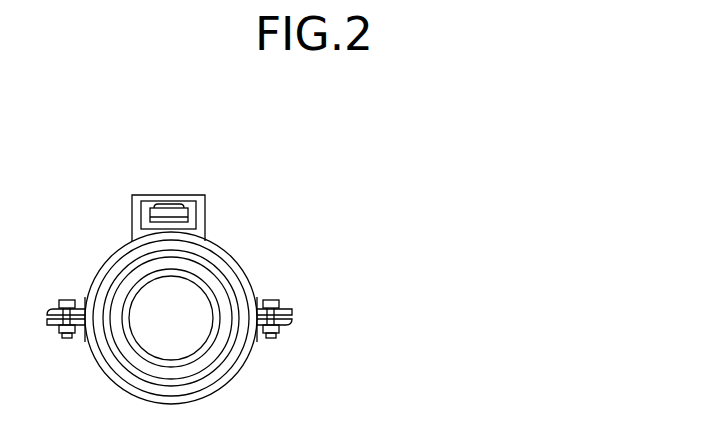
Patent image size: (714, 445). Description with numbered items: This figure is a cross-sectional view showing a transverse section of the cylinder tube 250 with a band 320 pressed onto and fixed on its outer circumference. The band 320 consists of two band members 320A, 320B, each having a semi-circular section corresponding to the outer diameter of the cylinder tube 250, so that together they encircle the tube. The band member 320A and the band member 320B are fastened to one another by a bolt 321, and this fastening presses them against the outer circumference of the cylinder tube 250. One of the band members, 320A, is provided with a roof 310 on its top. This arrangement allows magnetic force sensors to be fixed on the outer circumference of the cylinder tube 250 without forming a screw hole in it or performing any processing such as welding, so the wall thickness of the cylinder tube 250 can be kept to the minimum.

The roof 310 is at (168, 193).
The band 320 is at (540, 200).
The band member 320A is at (228, 248).
The band member 320B is at (250, 353).
The bolt 321 is at (66, 300).
The cylinder tube 250 is at (228, 365).